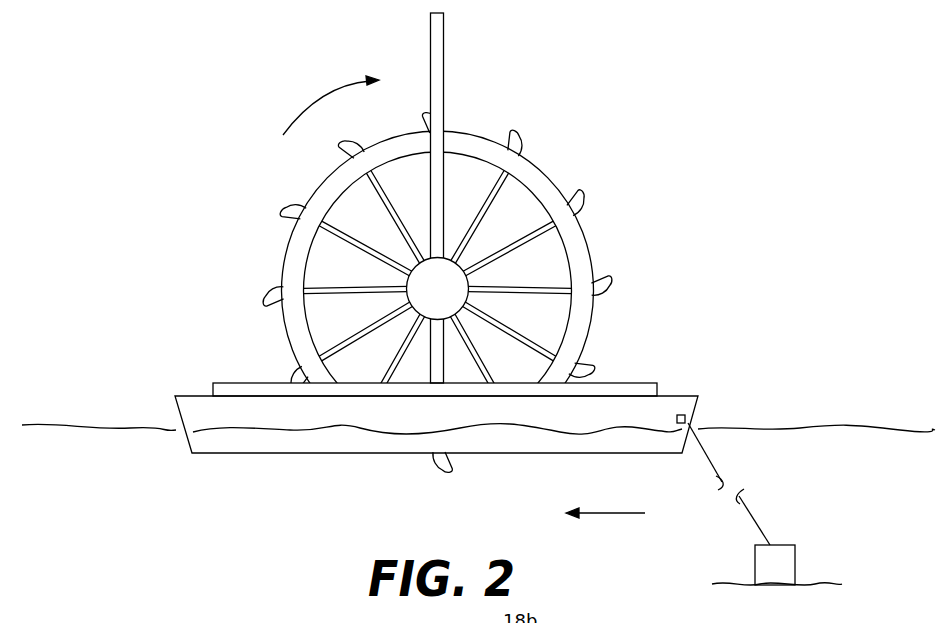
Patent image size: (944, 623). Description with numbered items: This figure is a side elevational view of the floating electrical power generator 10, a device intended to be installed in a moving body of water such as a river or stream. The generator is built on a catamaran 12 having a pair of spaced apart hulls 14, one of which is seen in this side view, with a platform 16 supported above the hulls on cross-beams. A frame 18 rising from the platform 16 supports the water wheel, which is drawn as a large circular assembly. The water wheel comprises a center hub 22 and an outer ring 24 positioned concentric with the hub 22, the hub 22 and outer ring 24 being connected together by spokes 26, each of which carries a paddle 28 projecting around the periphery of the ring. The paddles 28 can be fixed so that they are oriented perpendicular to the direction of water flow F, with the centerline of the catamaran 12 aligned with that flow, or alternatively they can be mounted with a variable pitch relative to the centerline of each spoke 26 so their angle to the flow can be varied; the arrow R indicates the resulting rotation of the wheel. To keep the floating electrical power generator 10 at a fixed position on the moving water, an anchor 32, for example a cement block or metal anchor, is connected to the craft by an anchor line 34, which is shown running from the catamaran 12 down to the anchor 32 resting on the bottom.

The floating electrical power generator 10 is at (210, 71).
The catamaran 12 is at (441, 257).
The hulls 14 is at (195, 413).
The platform 16 is at (225, 372).
The frame 18 is at (452, 50).
The center hub 22 is at (478, 278).
The outer ring 24 is at (538, 183).
The spokes 26 is at (499, 247).
The paddle 28 is at (264, 281).
The anchor 32 is at (782, 558).
The anchor line 34 is at (755, 519).